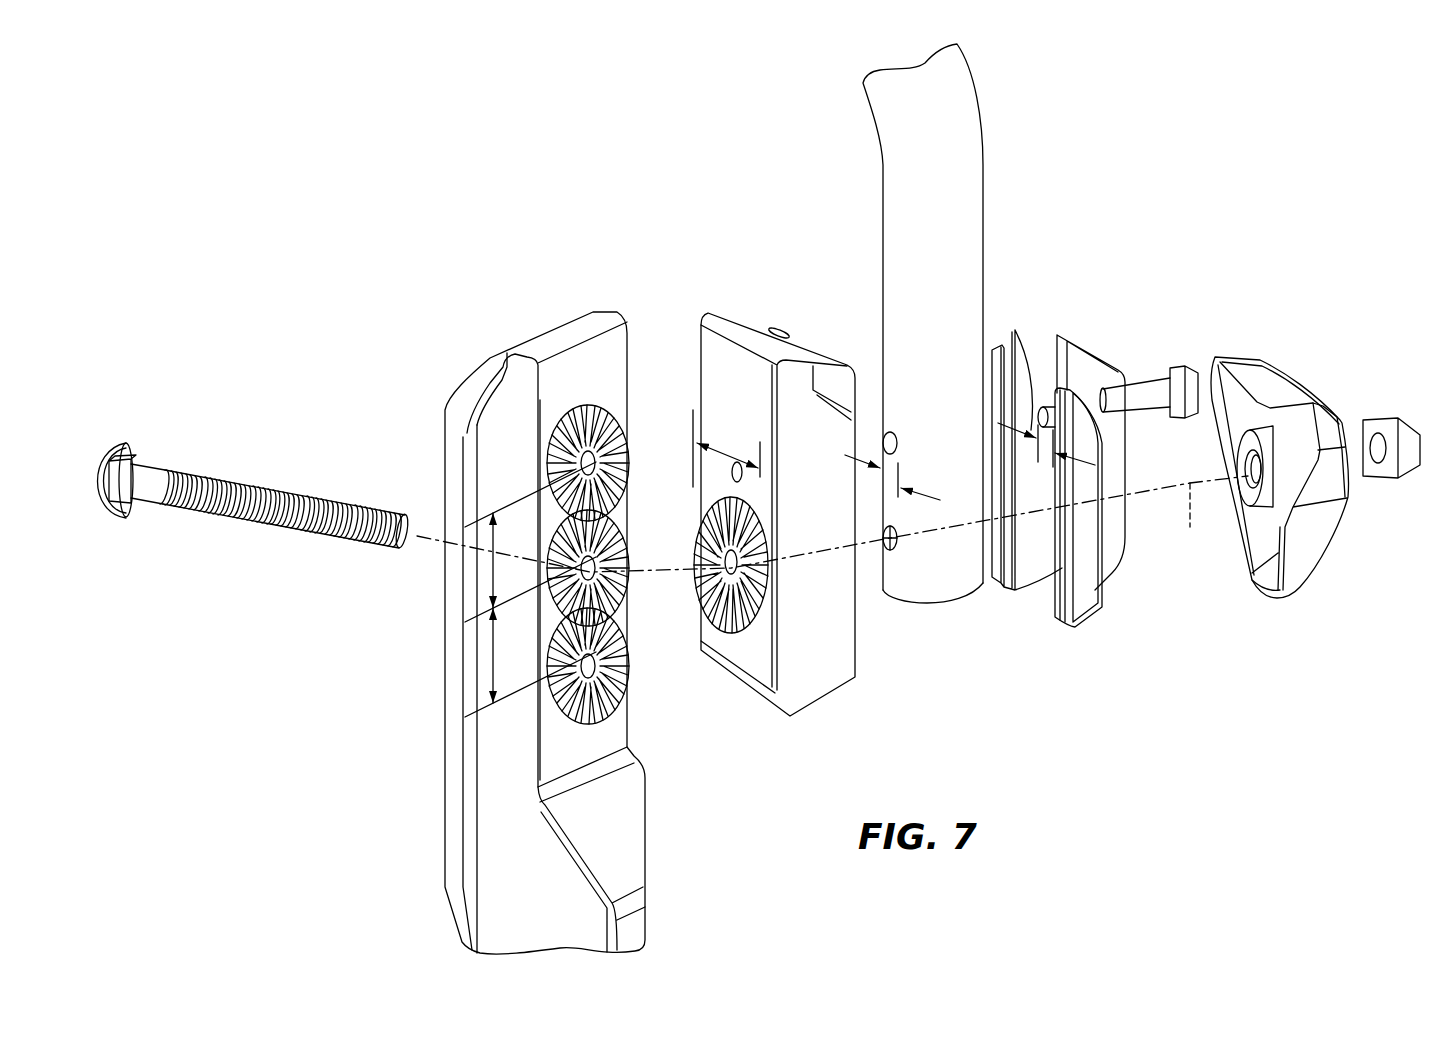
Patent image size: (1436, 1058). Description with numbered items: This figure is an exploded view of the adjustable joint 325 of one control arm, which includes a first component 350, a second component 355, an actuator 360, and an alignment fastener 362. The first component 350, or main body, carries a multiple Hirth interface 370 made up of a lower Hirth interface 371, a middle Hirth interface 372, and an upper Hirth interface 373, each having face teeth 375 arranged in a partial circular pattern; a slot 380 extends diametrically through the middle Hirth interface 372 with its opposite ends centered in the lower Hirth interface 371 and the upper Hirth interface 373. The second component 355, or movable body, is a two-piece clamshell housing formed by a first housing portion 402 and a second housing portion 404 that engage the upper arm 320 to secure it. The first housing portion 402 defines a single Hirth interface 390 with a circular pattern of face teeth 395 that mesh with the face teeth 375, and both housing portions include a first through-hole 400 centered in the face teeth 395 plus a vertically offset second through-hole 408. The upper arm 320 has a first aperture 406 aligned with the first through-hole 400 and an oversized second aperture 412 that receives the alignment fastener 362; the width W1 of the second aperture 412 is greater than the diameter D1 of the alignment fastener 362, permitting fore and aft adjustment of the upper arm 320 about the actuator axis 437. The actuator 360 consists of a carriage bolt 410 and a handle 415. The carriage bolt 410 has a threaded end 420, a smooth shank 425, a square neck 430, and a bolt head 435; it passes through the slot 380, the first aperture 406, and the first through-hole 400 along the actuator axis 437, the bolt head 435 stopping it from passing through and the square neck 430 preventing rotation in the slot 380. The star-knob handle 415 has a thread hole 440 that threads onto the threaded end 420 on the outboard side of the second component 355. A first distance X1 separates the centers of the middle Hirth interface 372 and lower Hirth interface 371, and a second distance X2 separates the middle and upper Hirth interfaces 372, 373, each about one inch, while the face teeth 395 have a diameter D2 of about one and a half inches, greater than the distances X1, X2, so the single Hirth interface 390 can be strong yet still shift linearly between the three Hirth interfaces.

The upper arm 320 is at (940, 351).
The adjustable joint 325 is at (1087, 672).
The first component 350 is at (537, 599).
The second component 355 is at (1055, 504).
The actuator 360 is at (1298, 520).
The alignment fastener 362 is at (1152, 390).
The multiple Hirth interface 370 is at (640, 718).
The lower Hirth interface 371 is at (598, 664).
The middle Hirth interface 372 is at (612, 572).
The upper Hirth interface 373 is at (627, 407).
The face teeth 375 is at (600, 405).
The slot 380 is at (578, 620).
The single Hirth interface 390 is at (747, 633).
The face teeth 395 is at (758, 594).
The first through-hole 400 is at (730, 570).
The first housing portion 402 is at (769, 512).
The second housing portion 404 is at (1083, 363).
The first aperture 406 is at (885, 545).
The second through-hole 408 is at (731, 474).
The carriage bolt 410 is at (252, 478).
The second aperture 412 is at (893, 432).
The handle 415 is at (1293, 573).
The threaded end 420 is at (357, 532).
The smooth shank 425 is at (143, 488).
The square neck 430 is at (122, 448).
The bolt head 435 is at (110, 444).
The actuator axis 437 is at (1186, 520).
The thread hole 440 is at (1245, 483).
The first distance X1 is at (493, 660).
The second distance X2 is at (493, 563).
The diameter of the alignment fastener D1 is at (1037, 425).
The diameter of the face teeth D2 is at (721, 443).
The width of the second aperture W1 is at (930, 495).